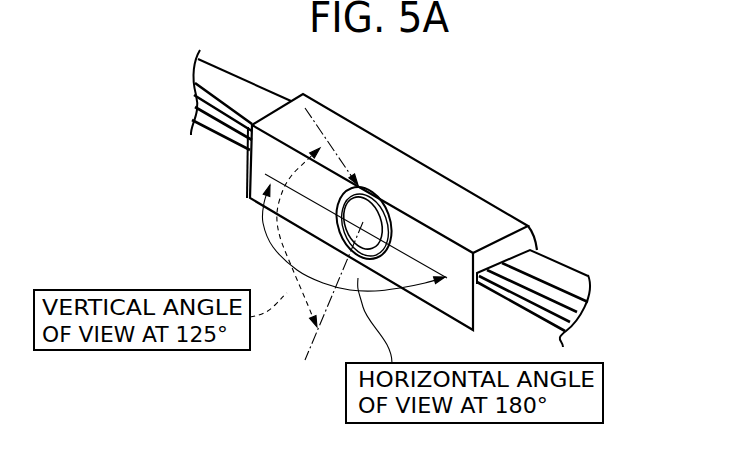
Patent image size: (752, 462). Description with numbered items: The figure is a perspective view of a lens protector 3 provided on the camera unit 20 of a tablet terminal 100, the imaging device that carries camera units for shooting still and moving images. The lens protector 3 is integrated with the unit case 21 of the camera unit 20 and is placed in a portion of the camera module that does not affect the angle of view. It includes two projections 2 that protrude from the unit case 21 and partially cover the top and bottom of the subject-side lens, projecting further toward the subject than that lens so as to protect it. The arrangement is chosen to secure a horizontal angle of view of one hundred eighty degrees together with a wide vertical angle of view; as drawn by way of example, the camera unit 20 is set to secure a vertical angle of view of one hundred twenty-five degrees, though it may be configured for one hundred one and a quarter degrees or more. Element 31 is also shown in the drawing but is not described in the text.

The tablet terminal 100 is at (406, 198).
The camera unit 20 is at (432, 212).
The unit case 21 is at (462, 212).
The support rail 31 is at (547, 272).
The projection 2 is at (392, 213).
The lens protector 3 is at (368, 200).